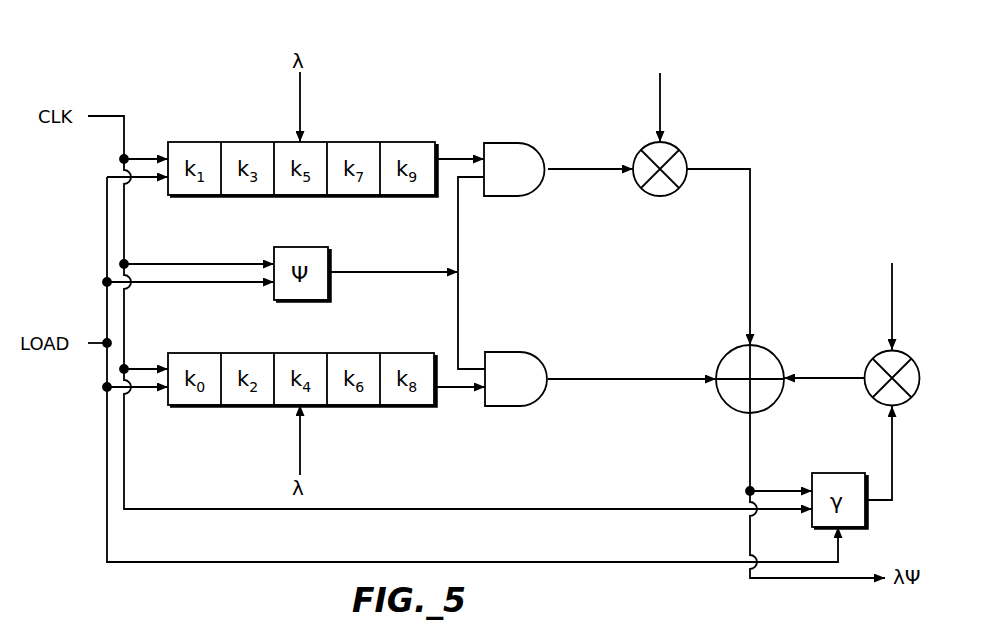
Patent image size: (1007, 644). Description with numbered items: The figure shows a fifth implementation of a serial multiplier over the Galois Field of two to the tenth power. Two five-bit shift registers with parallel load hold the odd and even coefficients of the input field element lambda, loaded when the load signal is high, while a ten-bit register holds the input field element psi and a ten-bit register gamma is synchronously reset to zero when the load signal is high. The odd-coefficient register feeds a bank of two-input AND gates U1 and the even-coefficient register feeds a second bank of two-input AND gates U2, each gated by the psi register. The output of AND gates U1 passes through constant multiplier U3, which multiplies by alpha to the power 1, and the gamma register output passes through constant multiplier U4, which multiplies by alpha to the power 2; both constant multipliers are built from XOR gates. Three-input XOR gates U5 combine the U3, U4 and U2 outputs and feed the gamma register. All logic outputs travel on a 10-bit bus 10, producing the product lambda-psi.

The 10-bit bus 10 is at (895, 454).
The 2-input AND gates U1 is at (514, 157).
The 2-input AND gates U2 is at (516, 367).
The Galois Field constant multiplier U3 is at (665, 160).
The Galois Field constant multiplier U4 is at (896, 368).
The 3-input XOR gates U5 is at (753, 368).
The alpha to the first power 1 is at (660, 94).
The alpha to the second power 2 is at (890, 293).